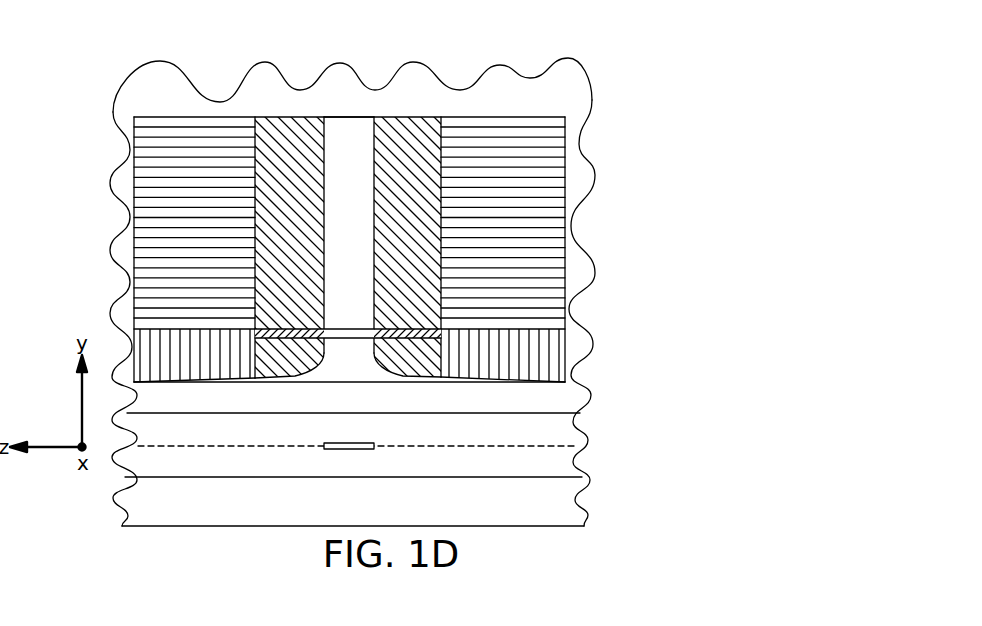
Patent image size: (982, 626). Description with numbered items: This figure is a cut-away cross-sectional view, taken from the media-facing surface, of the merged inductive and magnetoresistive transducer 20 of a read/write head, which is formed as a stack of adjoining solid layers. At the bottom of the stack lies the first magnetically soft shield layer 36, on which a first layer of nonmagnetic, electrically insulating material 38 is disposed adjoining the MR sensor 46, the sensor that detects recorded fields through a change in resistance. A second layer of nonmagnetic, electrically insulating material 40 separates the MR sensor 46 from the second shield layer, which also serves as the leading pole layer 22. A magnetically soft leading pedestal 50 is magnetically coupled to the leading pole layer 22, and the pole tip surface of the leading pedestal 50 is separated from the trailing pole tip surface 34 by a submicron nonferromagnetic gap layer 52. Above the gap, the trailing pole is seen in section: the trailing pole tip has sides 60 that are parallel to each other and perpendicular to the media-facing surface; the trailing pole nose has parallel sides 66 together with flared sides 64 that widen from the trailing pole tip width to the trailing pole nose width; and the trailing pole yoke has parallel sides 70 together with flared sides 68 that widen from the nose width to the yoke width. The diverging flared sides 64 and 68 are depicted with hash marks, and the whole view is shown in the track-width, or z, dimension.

The merged inductive and magnetoresistive transducer 20 is at (432, 52).
The leading pole layer 22 is at (568, 405).
The trailing pole tip surface 34 is at (337, 236).
The first magnetically soft shield layer 36 is at (575, 497).
The first layer of nonmagnetic, electrically insulating material 38 is at (575, 458).
The second layer of nonmagnetic, electrically insulating material 40 is at (565, 425).
The MR sensor 46 is at (349, 449).
The leading pedestal 50 is at (348, 366).
The nonferromagnetic gap layer 52 is at (334, 336).
The sides of trailing pole tip 60 is at (318, 126).
The flared sides of trailing pole nose 64 is at (281, 236).
The parallel sides of trailing pole nose 66 is at (250, 115).
The flared sides of trailing pole yoke 68 is at (178, 236).
The parallel sides of trailing pole yoke 70 is at (122, 175).